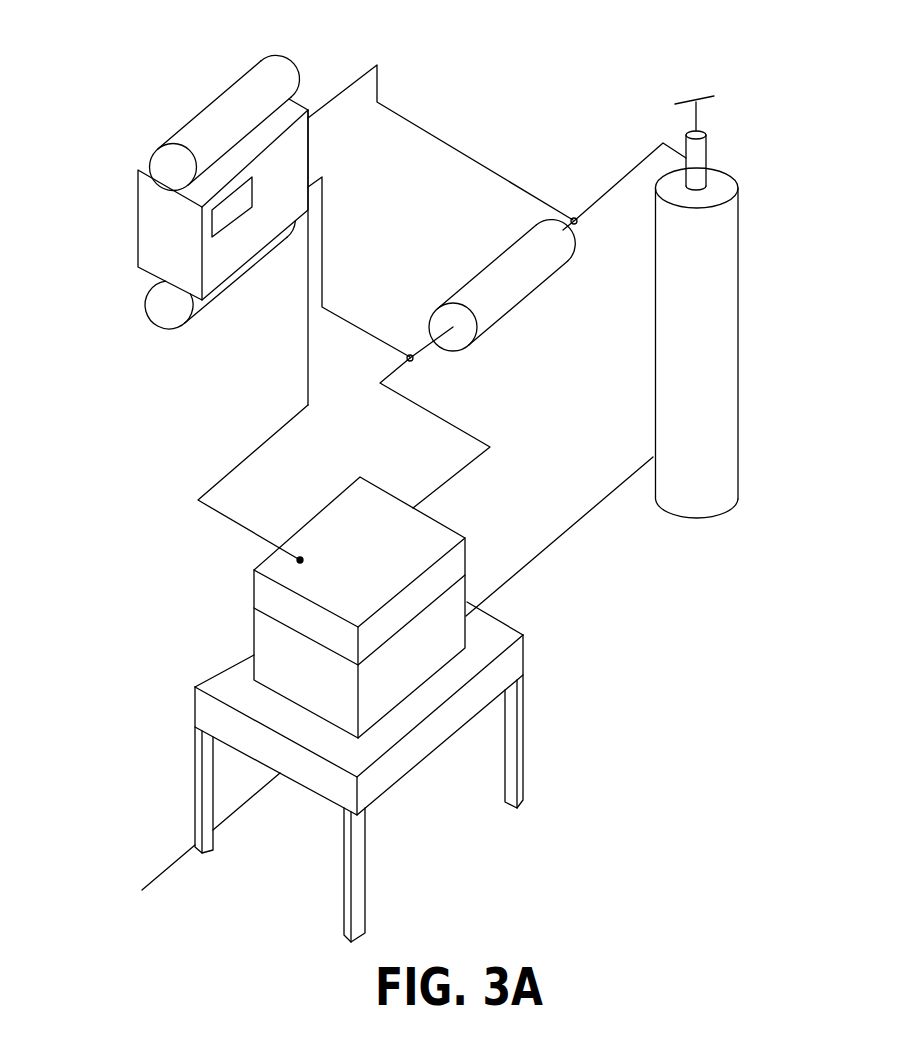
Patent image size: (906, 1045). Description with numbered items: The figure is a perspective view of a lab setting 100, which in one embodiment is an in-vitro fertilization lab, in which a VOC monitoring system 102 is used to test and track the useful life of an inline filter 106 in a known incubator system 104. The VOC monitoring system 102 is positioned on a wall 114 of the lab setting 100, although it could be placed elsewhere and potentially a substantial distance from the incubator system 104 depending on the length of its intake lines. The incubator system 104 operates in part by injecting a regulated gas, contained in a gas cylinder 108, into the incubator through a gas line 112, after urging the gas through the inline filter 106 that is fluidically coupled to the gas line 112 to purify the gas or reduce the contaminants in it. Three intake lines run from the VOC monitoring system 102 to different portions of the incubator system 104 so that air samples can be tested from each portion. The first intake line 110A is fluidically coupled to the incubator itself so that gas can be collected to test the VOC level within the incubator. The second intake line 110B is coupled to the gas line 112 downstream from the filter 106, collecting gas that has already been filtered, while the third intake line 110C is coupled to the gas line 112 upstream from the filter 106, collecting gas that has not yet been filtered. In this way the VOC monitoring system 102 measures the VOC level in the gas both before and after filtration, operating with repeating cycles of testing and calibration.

The lab setting 100 is at (107, 82).
The VOC monitoring system 102 is at (124, 224).
The incubator system 104 is at (214, 626).
The inline filter 106 is at (525, 281).
The gas cylinder 108 is at (716, 310).
The first intake line 110A is at (230, 470).
The second intake line 110B is at (347, 322).
The third intake line 110C is at (480, 163).
The gas line 112 is at (467, 433).
The wall 114 is at (74, 313).